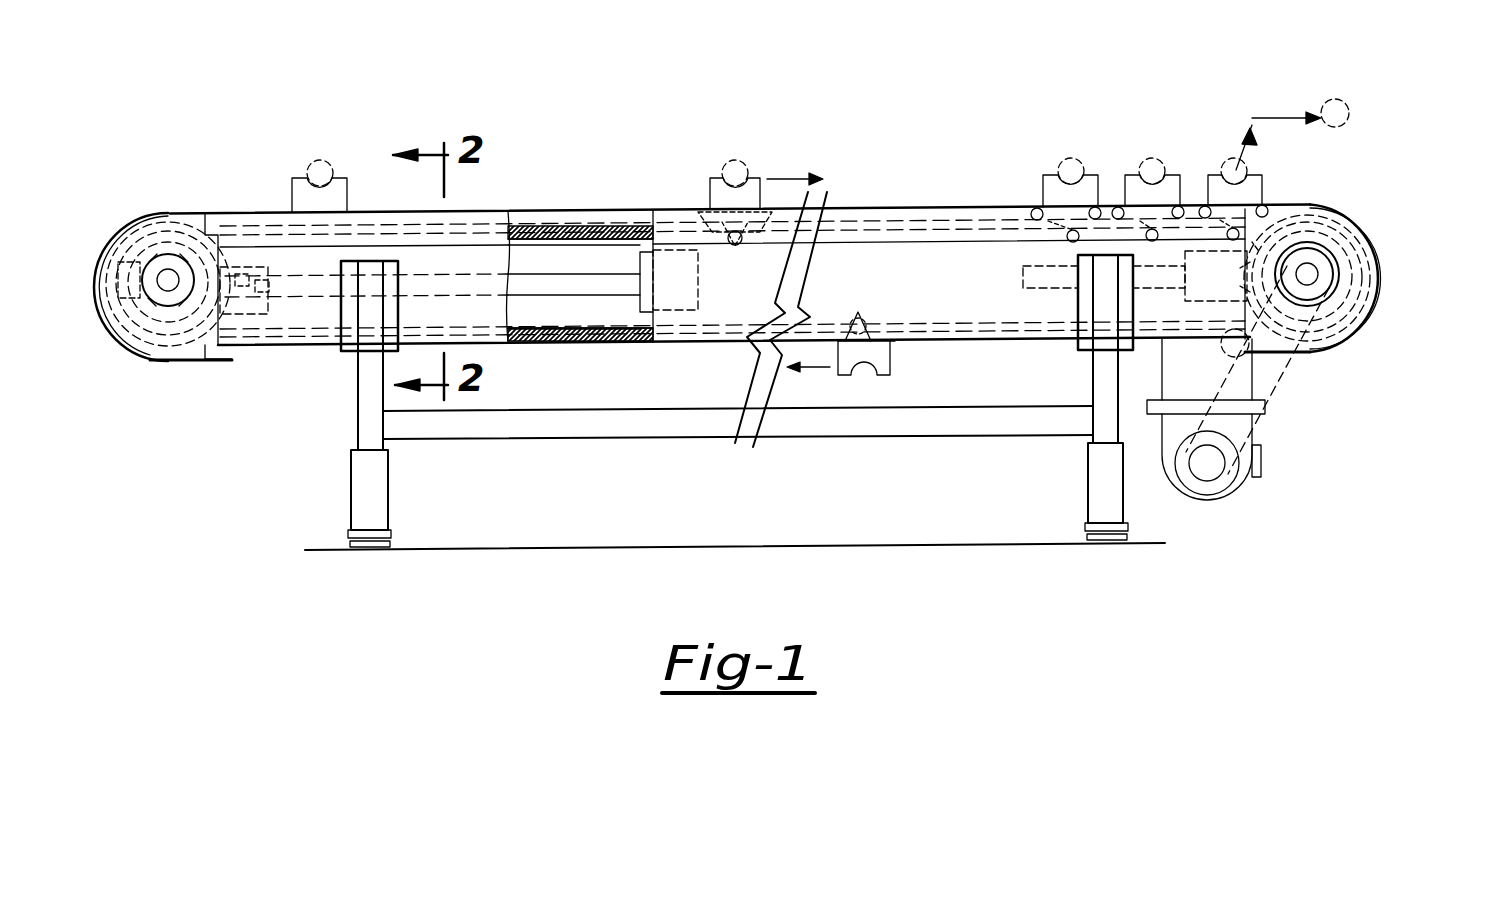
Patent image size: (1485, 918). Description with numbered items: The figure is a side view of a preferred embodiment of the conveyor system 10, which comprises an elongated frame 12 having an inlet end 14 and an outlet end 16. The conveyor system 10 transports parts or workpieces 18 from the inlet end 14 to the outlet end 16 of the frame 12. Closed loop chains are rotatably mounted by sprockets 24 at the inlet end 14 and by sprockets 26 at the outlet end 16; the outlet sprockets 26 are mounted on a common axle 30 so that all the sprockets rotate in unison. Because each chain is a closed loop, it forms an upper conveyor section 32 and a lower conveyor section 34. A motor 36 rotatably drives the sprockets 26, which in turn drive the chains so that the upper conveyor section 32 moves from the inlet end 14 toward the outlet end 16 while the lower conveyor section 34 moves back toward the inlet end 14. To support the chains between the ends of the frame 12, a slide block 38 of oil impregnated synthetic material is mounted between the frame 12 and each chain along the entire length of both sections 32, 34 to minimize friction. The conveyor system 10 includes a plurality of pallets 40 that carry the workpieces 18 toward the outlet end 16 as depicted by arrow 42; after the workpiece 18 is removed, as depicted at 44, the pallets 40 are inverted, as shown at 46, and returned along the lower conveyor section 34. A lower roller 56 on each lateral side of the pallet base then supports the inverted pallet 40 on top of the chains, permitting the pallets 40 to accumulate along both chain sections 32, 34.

The conveyor system 10 is at (726, 145).
The elongated frame 12 is at (358, 388).
The inlet end 14 is at (169, 203).
The outlet end 16 is at (1376, 197).
The workpieces 18 is at (323, 161).
The inlet sprockets 24 is at (165, 302).
The outlet sprockets 26 is at (1372, 258).
The common axle 30 is at (1309, 277).
The upper conveyor section 32 is at (556, 226).
The lower conveyor section 34 is at (584, 340).
The motor 36 is at (1210, 465).
The slide block 38 is at (618, 226).
The pallets 40 is at (1055, 195).
The arrow 42 is at (778, 178).
The workpiece removal 44 is at (1362, 97).
The inverted pallet 46 is at (862, 388).
The lower roller 56 is at (866, 318).